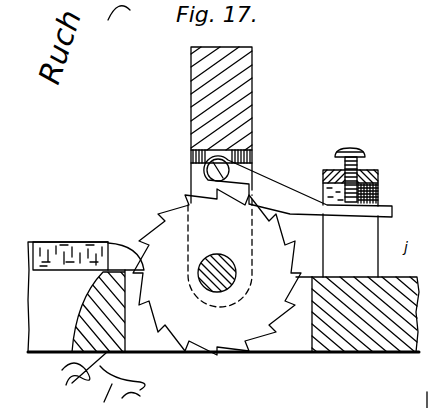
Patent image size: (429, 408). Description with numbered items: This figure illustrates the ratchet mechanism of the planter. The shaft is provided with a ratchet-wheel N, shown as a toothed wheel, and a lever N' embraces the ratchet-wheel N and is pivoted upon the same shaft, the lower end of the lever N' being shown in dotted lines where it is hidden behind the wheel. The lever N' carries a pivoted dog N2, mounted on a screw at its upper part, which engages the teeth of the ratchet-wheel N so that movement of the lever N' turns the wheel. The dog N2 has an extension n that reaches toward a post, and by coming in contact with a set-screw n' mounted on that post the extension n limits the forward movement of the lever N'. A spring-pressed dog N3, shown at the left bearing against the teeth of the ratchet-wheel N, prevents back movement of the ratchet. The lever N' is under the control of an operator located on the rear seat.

The ratchet-wheel N is at (217, 272).
The lever N' is at (233, 177).
The pivoted dog N2 is at (264, 176).
The spring-pressed dog N3 is at (97, 244).
The extension n is at (364, 223).
The set-screw n' is at (366, 174).